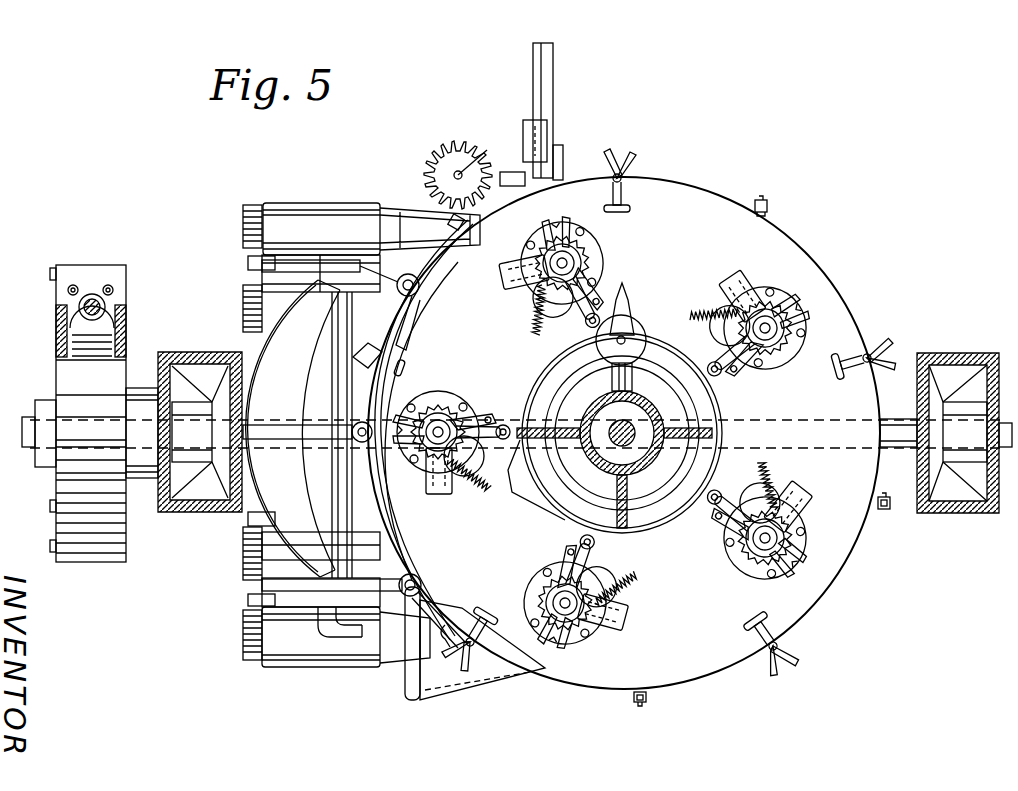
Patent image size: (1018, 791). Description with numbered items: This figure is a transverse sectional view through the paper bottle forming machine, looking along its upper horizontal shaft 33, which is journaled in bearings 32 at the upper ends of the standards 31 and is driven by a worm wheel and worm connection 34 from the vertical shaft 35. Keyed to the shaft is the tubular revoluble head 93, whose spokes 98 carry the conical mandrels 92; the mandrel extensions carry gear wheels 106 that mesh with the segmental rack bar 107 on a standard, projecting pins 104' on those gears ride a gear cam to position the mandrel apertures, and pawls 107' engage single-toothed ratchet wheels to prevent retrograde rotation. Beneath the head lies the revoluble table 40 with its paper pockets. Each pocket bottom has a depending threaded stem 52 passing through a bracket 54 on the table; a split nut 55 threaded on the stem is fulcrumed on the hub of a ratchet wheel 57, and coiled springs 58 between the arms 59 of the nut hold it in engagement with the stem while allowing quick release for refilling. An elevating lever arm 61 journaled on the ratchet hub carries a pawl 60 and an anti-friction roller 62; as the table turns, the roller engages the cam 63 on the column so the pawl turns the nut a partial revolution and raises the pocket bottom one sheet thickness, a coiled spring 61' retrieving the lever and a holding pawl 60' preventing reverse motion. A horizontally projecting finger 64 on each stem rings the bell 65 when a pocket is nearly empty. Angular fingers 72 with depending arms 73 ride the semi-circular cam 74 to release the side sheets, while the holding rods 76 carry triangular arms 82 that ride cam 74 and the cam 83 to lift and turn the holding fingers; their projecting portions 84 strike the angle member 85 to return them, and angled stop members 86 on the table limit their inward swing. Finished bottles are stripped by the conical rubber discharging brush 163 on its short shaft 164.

The standards 31 is at (185, 512).
The bearings 32 is at (195, 405).
The upper horizontal shaft 33 is at (905, 448).
The worm wheel and worm connection 34 is at (72, 325).
The vertical shaft 35 is at (110, 310).
The revoluble table 40 is at (848, 552).
The threaded stems 52 is at (450, 400).
The brackets 54 is at (438, 494).
The split nuts 55 is at (535, 260).
The ratchet wheels 57 is at (460, 412).
The coiled springs 58 is at (552, 230).
The arms 59 is at (418, 448).
The pawls 60 is at (621, 444).
The holding pawls 60' is at (655, 503).
The elevating lever arms 61 is at (605, 432).
The coiled springs 61' is at (636, 401).
The anti-friction rollers 62 is at (585, 342).
The cam 63 is at (510, 485).
The horizontally projecting fingers 64 is at (432, 452).
The bell 65 is at (645, 336).
The angular fingers 72 is at (884, 510).
The arms 73 is at (768, 208).
The semi-circular cam 74 is at (418, 590).
The vertically extending rod 76 is at (625, 172).
The arms 82 is at (398, 370).
The cam 83 is at (392, 556).
The projecting portions 84 is at (632, 170).
The angle member 85 is at (437, 645).
The angled stop members 86 is at (630, 207).
The conical mandrels 92 is at (402, 205).
The tubular revoluble head 93 is at (328, 640).
The spokes 98 is at (335, 490).
The projecting pins 104' is at (226, 472).
The gear wheels 106 is at (258, 238).
The segmental rack bar 107 is at (237, 525).
The pawls 107' is at (232, 431).
The conical rubber discharging brush 163 is at (455, 145).
The short shaft 164 is at (468, 165).